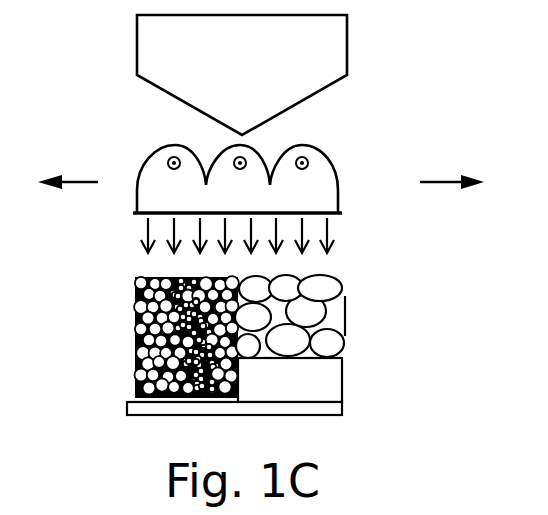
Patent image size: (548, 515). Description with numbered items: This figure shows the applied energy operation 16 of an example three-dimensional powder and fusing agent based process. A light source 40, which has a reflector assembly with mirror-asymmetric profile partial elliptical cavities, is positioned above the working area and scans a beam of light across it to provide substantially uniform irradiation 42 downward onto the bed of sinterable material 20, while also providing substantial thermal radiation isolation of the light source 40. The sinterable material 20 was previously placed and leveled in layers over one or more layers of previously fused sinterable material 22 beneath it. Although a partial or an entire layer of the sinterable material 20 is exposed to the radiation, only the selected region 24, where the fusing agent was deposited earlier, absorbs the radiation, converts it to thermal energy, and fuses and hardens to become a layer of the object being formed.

The applied energy operation 16 is at (242, 75).
The sinterable material 20 is at (137, 305).
The previously fused sinterable material 22 is at (327, 388).
The selected region 24 is at (317, 283).
The light source 40 is at (333, 165).
The substantially uniform irradiation 42 is at (333, 222).